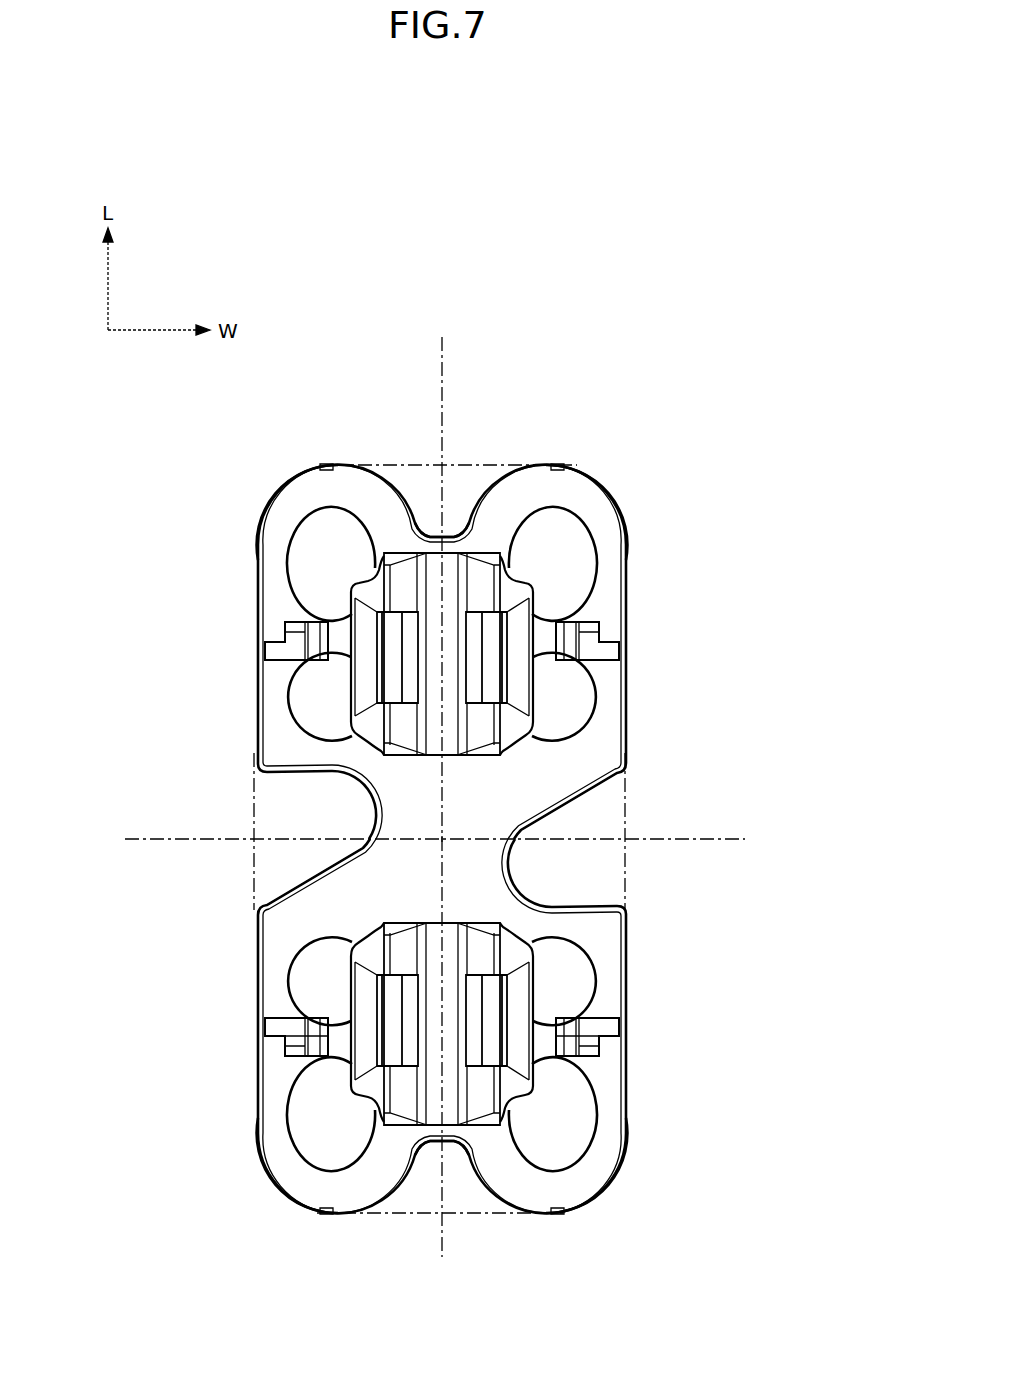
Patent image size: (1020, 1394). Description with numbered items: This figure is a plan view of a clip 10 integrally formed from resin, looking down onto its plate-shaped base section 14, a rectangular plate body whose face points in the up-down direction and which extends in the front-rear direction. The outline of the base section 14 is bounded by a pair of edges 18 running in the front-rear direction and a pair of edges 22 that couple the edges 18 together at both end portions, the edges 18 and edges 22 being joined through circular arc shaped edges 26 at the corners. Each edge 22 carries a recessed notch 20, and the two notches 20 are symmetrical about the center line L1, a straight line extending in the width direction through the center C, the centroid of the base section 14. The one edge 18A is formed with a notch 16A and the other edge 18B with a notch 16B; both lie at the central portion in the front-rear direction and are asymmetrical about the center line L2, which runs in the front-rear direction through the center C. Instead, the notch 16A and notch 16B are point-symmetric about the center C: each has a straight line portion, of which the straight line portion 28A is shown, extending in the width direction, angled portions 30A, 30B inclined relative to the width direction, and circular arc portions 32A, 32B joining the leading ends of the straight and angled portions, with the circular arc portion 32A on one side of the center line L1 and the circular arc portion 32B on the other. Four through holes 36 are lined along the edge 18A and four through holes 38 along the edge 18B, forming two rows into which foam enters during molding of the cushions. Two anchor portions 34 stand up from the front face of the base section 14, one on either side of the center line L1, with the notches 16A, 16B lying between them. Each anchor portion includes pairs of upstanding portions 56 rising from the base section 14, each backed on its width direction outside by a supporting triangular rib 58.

The clip 10 is at (643, 302).
The base section 14 is at (445, 824).
The notch 16A is at (285, 770).
The notch 16B is at (571, 891).
The edge 18A is at (260, 647).
The edge 18B is at (623, 624).
The edges 18 is at (441, 1068).
The notch 20 is at (416, 521).
The edges 22 is at (557, 466).
The circular arc shaped edges 26 is at (275, 488).
The straight line portion 28A is at (288, 772).
The angled portion 30A is at (297, 857).
The angled portion 30B is at (585, 793).
The circular arc portion 32A is at (357, 810).
The circular arc portion 32B is at (506, 864).
The anchor portion 34 is at (502, 530).
The through holes 36 is at (293, 565).
The through holes 38 is at (585, 558).
The upstanding portion 56 is at (317, 1058).
The triangular rib 58 is at (265, 1027).
The center C is at (442, 838).
The center line L1 is at (740, 838).
The center line L2 is at (446, 372).